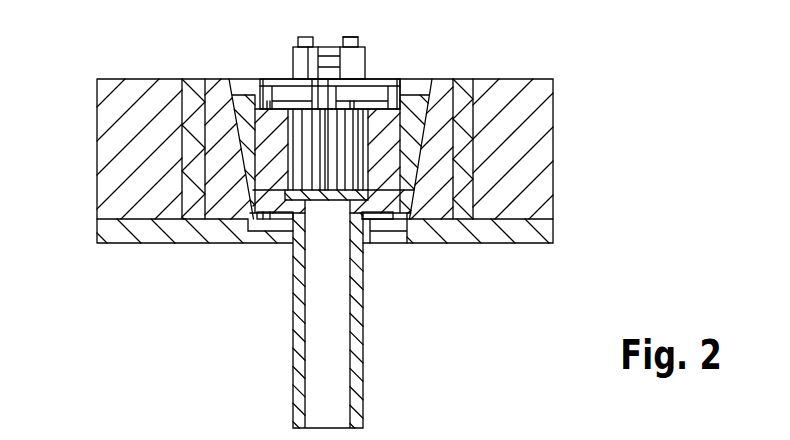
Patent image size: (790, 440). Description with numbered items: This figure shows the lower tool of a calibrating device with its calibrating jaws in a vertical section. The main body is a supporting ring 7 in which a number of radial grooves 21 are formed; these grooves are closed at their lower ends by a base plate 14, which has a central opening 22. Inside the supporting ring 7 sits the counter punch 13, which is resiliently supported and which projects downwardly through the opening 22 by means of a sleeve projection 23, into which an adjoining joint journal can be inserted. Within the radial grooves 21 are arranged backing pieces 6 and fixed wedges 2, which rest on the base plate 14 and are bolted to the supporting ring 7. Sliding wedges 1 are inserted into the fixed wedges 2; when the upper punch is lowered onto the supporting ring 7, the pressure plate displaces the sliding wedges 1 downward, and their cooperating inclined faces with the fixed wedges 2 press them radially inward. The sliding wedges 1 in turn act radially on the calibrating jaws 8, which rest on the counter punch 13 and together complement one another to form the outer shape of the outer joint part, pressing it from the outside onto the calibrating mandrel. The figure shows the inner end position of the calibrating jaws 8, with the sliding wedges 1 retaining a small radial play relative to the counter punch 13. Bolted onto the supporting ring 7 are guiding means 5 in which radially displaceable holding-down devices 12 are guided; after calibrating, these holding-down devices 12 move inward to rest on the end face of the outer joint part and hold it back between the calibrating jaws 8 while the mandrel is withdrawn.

The sliding wedge 1 is at (410, 178).
The fixed wedge 2 is at (438, 148).
The guiding means 5 is at (320, 50).
The backing piece 6 is at (462, 120).
The supporting ring 7 is at (556, 93).
The calibrating jaw 8 is at (263, 153).
The holding-down device 12 is at (323, 62).
The counter punch 13 is at (262, 199).
The base plate 14 is at (542, 233).
The radial groove 21 is at (392, 18).
The central opening 22 is at (368, 226).
The sleeve projection 23 is at (298, 297).